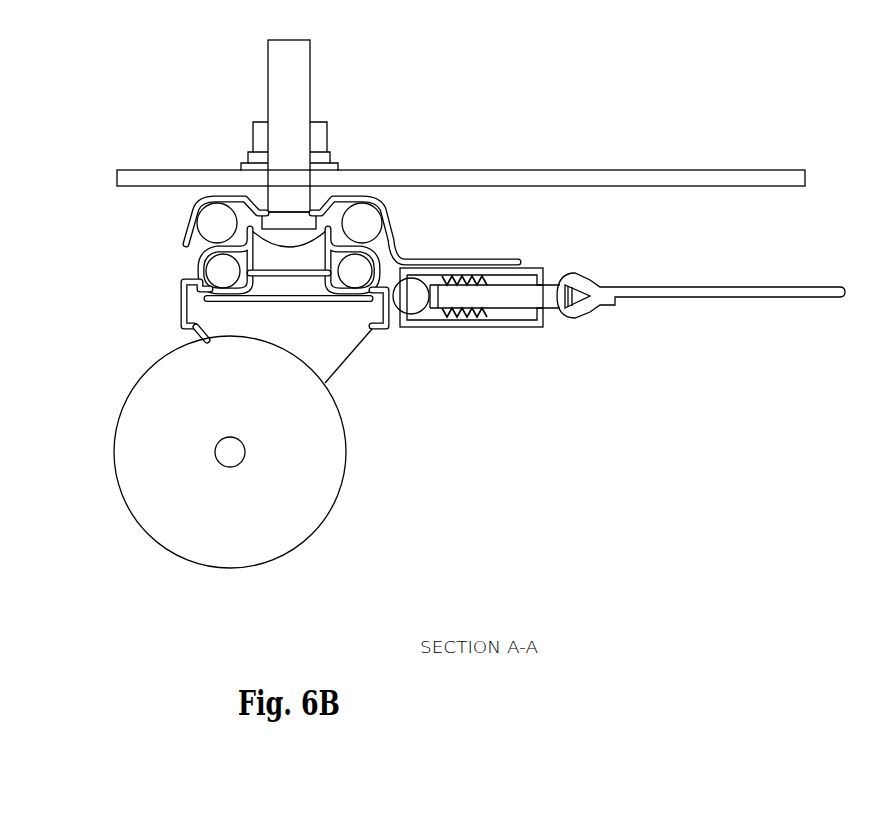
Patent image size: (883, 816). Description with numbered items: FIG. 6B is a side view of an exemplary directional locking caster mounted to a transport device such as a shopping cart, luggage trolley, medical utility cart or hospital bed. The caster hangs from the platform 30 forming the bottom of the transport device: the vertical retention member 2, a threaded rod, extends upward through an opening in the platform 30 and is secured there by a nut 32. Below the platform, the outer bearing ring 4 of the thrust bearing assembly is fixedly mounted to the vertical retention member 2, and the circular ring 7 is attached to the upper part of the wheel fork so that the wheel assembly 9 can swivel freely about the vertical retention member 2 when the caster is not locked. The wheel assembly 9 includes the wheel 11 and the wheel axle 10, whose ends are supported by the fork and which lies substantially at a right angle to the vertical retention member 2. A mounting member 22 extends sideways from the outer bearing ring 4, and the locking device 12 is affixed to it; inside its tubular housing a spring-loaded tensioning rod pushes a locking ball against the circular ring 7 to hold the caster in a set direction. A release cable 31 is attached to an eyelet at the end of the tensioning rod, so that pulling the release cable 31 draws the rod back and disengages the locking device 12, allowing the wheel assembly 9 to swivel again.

The vertical retention member 2 is at (318, 70).
The nut 32 is at (333, 132).
The platform 30 is at (605, 165).
The outer bearing ring 4 is at (398, 218).
The circular ring 7 is at (178, 293).
The wheel assembly 9 is at (96, 393).
The wheel axle 10 is at (234, 456).
The wheel 11 is at (230, 543).
The locking device 12 is at (492, 352).
The mounting member 22 is at (493, 250).
The release cable 31 is at (745, 280).